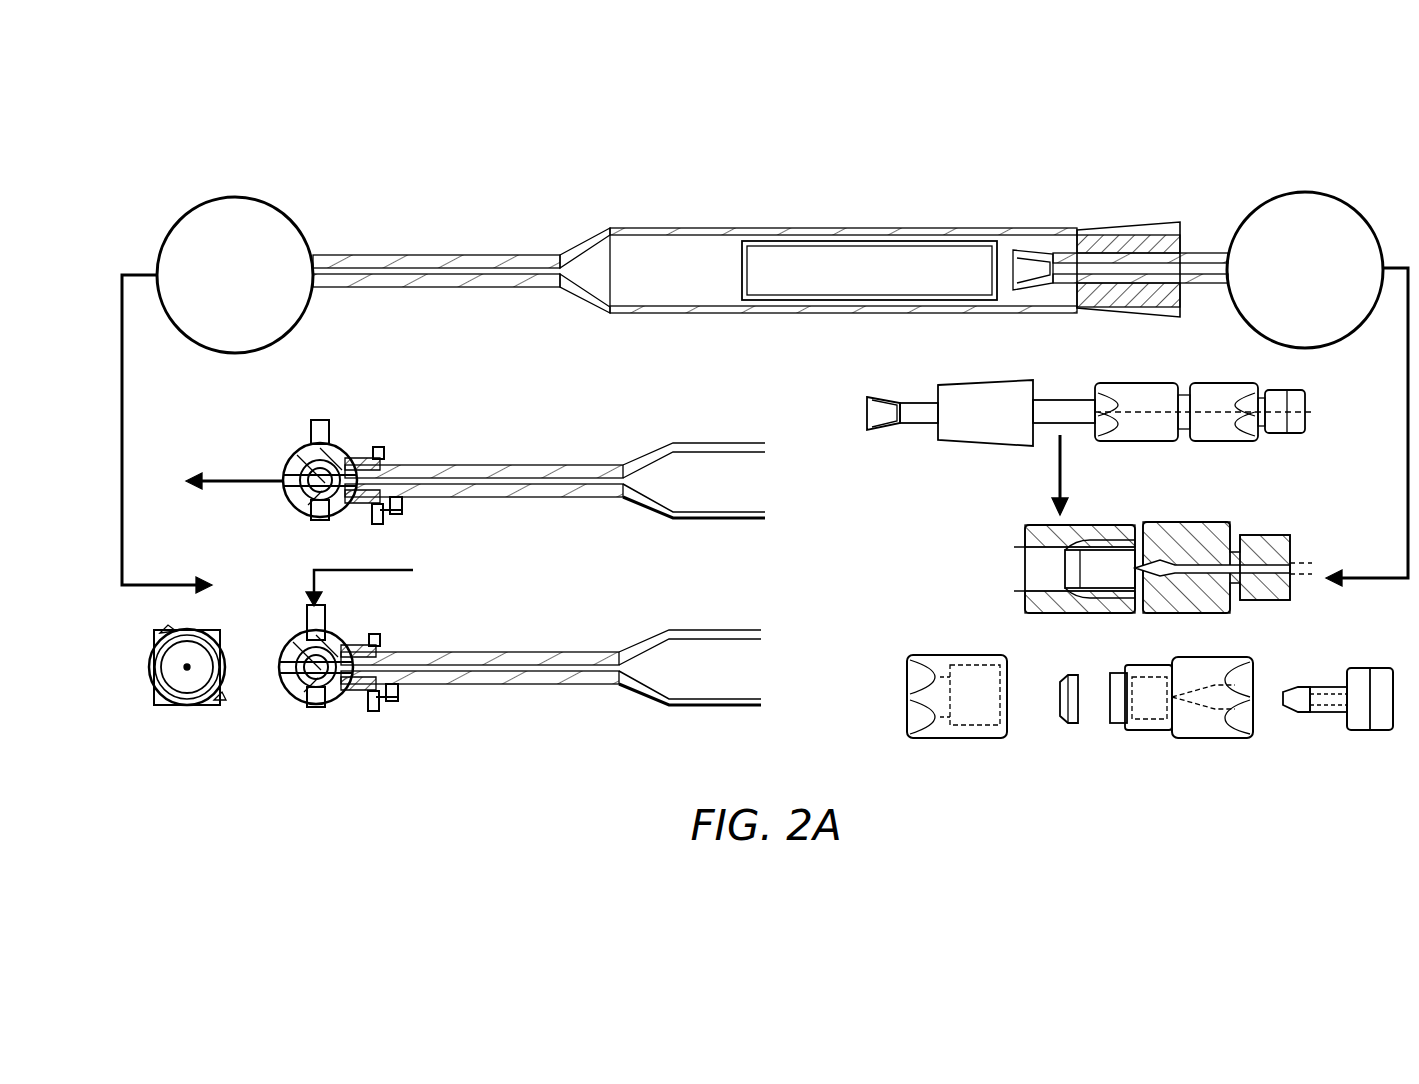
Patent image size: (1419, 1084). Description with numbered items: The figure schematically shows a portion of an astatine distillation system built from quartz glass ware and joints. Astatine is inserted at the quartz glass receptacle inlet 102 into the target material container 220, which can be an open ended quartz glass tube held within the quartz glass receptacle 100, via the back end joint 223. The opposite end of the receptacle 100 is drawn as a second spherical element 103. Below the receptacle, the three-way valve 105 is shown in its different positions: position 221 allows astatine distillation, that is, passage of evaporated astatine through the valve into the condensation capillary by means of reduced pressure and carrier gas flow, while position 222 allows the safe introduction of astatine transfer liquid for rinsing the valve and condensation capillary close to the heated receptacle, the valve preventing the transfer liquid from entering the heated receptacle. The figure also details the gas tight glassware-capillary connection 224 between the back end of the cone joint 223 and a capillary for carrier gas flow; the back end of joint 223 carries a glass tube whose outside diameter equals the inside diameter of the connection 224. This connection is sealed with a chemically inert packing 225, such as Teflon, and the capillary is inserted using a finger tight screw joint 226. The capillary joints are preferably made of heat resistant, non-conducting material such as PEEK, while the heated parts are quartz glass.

The quartz glass receptacle 100 is at (843, 249).
The quartz glass receptacle inlet 102 is at (1305, 254).
The first circle element 103 is at (235, 256).
The three-way valve 105 is at (524, 458).
The target material container 220 is at (869, 270).
The valve position for astatine distillation 221 is at (234, 467).
The valve position for transfer liquid introduction 222 is at (391, 599).
The back end joint 223 is at (1120, 249).
The glassware-capillary connection 224 is at (1163, 551).
The chemically inert packing 225 is at (1062, 681).
The finger tight screw joint 226 is at (1338, 680).